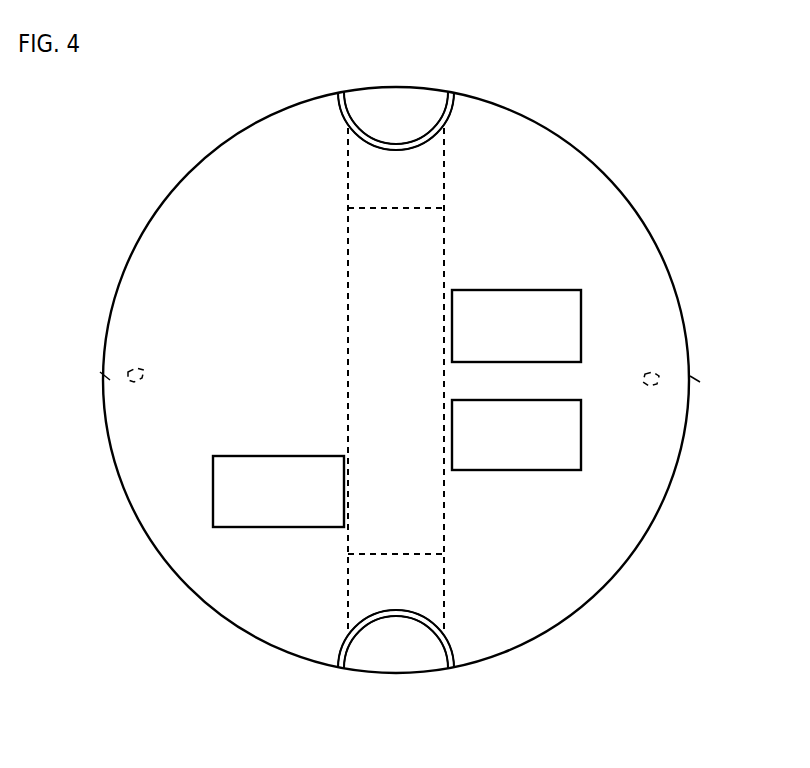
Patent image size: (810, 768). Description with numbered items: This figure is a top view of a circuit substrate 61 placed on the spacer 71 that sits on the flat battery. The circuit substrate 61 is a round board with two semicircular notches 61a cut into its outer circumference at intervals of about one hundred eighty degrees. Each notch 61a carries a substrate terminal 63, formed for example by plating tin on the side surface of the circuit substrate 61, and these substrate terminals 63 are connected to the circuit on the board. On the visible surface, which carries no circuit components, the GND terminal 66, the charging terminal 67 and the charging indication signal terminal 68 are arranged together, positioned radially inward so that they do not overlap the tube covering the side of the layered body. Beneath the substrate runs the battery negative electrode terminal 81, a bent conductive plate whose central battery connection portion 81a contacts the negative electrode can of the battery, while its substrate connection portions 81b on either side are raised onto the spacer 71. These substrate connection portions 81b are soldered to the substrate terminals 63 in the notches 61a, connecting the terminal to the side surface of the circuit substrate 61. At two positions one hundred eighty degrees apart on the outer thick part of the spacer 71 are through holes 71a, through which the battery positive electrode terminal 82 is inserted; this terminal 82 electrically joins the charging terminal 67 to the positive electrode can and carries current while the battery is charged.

The spacer 71 is at (228, 143).
The through holes 71a is at (108, 378).
The circuit substrate 61 is at (513, 125).
The semicircular notches 61a is at (443, 112).
The substrate terminal 63 is at (440, 103).
The GND terminal 66 is at (268, 465).
The charging terminal 67 is at (575, 325).
The charging indication signal terminal 68 is at (575, 428).
The battery negative electrode terminal 81 is at (462, 217).
The battery connection portion 81a is at (424, 253).
The substrate connection portions 81b is at (360, 188).
The battery positive electrode terminal 82 is at (130, 385).